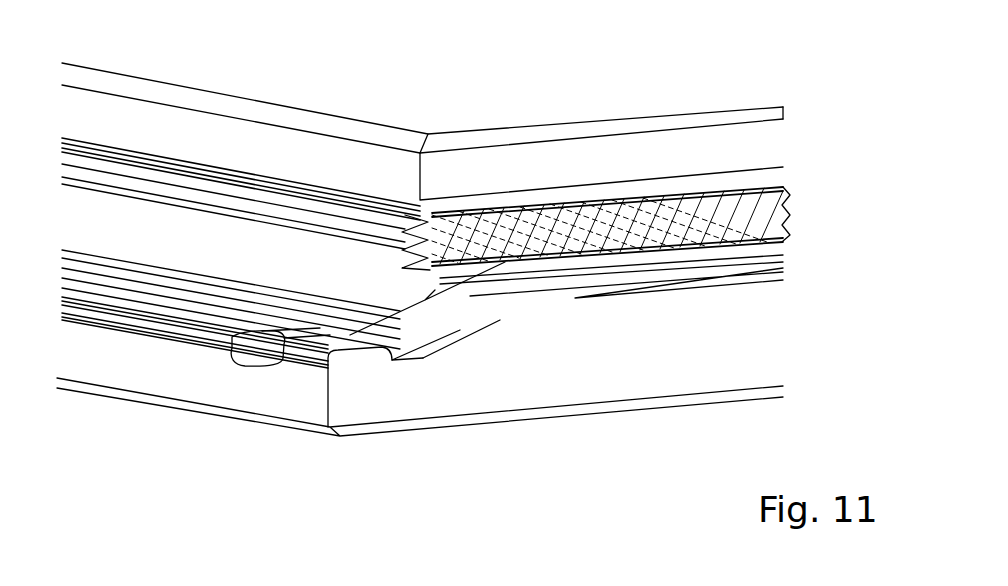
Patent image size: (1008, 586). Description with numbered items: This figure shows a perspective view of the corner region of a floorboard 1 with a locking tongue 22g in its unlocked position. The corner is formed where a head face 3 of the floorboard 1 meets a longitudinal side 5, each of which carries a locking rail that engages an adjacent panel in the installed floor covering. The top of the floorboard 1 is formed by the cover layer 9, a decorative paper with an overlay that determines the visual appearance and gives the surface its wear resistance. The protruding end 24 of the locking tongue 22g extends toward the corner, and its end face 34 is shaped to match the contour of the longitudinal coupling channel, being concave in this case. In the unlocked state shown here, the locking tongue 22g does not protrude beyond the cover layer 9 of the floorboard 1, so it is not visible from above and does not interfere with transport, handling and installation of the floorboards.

The floorboard 1 is at (708, 110).
The head face 3 is at (757, 134).
The longitudinal side 5 is at (206, 137).
The cover layer 9 is at (468, 153).
The locking tongue 22g is at (745, 246).
The end of locking tongue 24 is at (480, 250).
The end face 34 is at (410, 268).